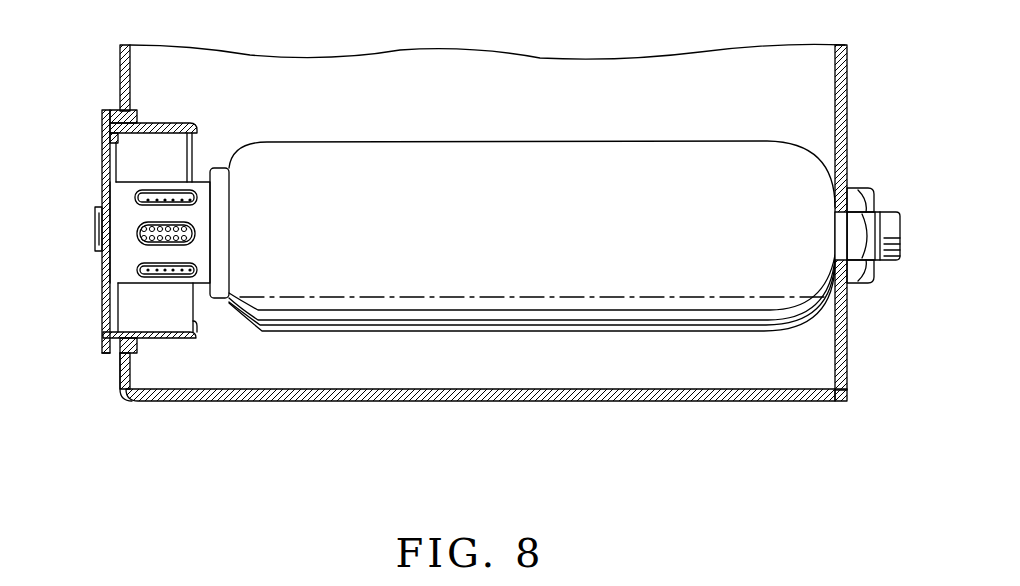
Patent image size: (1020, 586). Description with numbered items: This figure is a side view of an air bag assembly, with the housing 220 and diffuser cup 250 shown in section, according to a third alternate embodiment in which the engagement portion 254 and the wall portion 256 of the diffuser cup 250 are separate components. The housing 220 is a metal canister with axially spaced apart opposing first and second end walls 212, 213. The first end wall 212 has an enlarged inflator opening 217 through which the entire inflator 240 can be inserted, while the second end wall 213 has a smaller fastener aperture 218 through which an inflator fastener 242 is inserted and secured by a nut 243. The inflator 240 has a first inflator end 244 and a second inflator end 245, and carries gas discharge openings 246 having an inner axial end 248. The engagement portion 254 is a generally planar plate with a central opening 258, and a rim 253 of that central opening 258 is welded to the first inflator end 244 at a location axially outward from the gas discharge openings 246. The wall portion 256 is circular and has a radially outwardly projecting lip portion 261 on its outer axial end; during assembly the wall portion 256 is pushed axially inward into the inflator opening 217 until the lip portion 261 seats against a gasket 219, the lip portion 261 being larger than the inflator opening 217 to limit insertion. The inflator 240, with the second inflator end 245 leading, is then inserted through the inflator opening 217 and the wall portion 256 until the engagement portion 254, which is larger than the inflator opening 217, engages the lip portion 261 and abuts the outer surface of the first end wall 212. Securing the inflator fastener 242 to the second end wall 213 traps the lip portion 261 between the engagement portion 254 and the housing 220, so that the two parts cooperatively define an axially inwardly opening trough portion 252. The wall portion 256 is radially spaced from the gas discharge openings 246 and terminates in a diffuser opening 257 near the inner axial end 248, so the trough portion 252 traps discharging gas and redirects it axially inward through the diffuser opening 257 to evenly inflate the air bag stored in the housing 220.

The first end wall 212 is at (124, 346).
The second end wall 213 is at (848, 364).
The inflator opening 217 is at (121, 114).
The fastener aperture 218 is at (850, 210).
The gasket 219 is at (133, 345).
The housing 220 is at (591, 403).
The inflator 240 is at (570, 137).
The inflator fastener 242 is at (890, 259).
The nut 243 is at (871, 203).
The first inflator end 244 is at (209, 182).
The second inflator end 245 is at (740, 327).
The gas discharge openings 246 is at (158, 194).
The inner axial end 248 is at (188, 262).
The diffuser cup 250 is at (167, 121).
The trough portion 252 is at (192, 323).
The rim 253 is at (101, 196).
The engagement portion 254 is at (100, 338).
The wall portion 256 is at (170, 346).
The diffuser opening 257 is at (202, 181).
The central opening 258 is at (101, 268).
The lip portion 261 is at (114, 119).